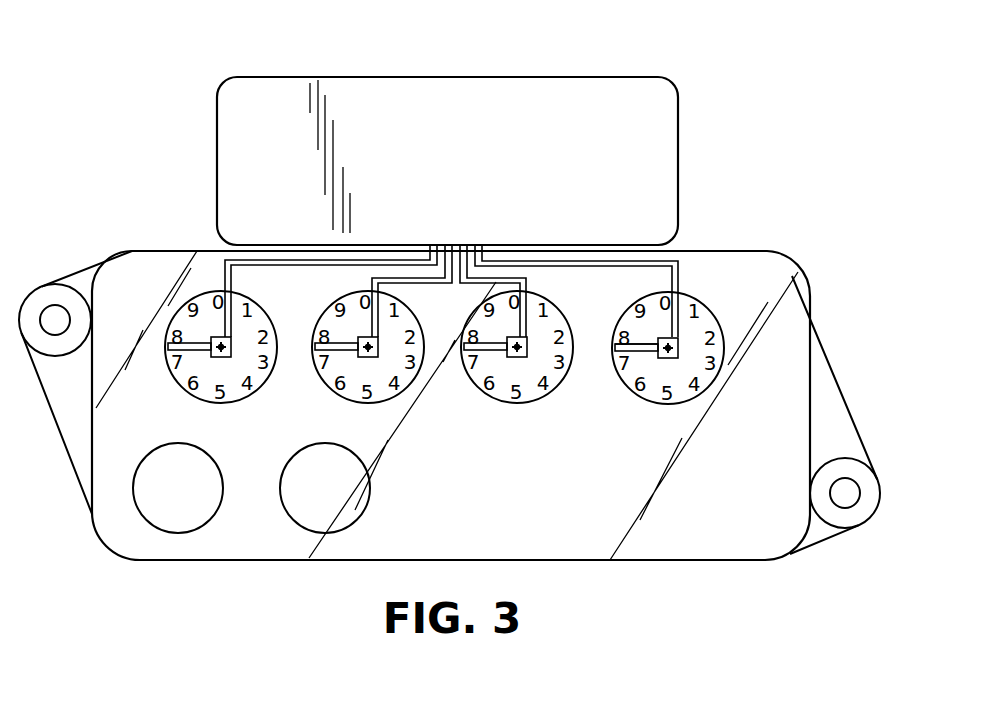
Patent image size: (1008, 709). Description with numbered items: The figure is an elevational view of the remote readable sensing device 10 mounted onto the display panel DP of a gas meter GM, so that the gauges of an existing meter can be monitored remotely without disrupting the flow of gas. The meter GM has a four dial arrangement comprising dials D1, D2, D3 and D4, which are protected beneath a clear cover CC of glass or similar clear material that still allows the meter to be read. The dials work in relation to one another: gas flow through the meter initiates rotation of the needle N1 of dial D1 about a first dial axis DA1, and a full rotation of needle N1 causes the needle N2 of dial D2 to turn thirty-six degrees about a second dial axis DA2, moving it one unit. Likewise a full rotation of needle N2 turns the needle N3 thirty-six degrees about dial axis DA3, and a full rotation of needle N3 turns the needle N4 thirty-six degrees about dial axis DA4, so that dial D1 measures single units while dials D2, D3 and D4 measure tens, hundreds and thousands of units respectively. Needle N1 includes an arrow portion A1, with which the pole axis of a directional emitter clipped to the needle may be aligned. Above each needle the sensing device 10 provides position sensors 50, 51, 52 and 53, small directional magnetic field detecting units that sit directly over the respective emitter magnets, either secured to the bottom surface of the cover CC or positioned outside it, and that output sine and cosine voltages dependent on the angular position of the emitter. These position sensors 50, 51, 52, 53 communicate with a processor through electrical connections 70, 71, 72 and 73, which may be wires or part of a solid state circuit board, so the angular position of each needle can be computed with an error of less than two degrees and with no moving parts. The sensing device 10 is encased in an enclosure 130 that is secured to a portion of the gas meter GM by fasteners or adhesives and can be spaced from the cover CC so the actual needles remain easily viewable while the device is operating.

The remote readable sensing device 10 is at (165, 170).
The enclosure 130 is at (663, 122).
The gas meter GM is at (803, 187).
The clear cover CC is at (737, 537).
The display panel DP is at (795, 303).
The electrical connection 70 is at (661, 259).
The electrical connection 71 is at (489, 292).
The electrical connection 72 is at (402, 280).
The electrical connection 73 is at (267, 262).
The position sensor 50 is at (680, 342).
The position sensor 51 is at (527, 342).
The position sensor 52 is at (378, 340).
The position sensor 53 is at (230, 340).
The arrow portion A1 is at (643, 340).
The dial D1 is at (682, 395).
The dial D2 is at (535, 395).
The dial D3 is at (385, 395).
The dial D4 is at (238, 393).
The needle N1 is at (642, 355).
The needle N2 is at (492, 355).
The needle N3 is at (343, 355).
The needle N4 is at (198, 352).
The first dial axis DA1 is at (663, 357).
The second dial axis DA2 is at (514, 358).
The dial axis DA3 is at (362, 355).
The dial axis DA4 is at (217, 355).